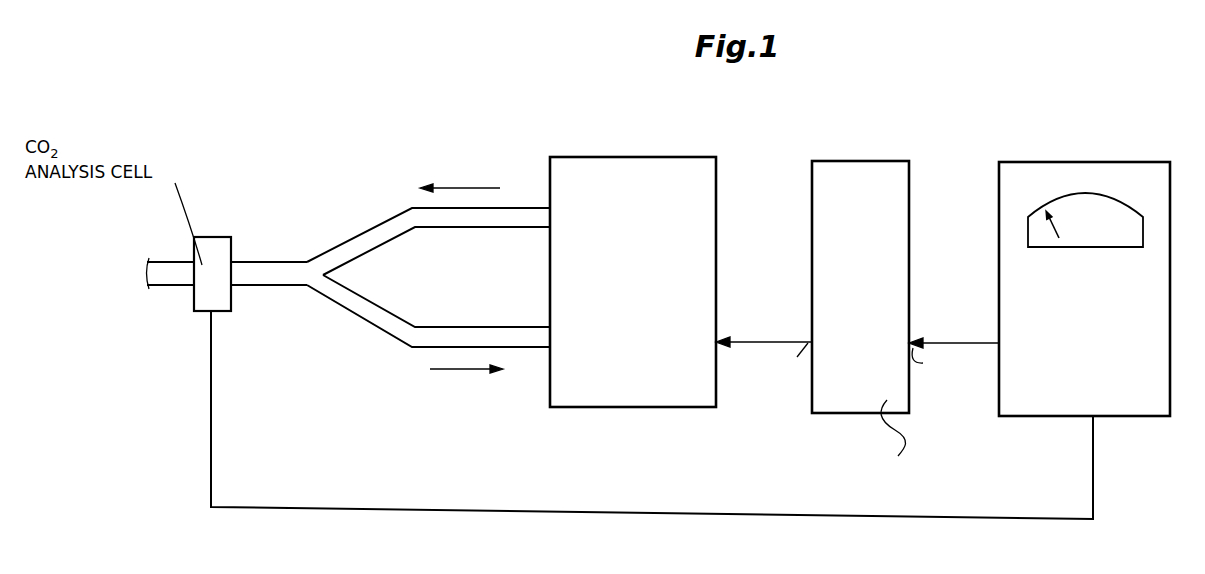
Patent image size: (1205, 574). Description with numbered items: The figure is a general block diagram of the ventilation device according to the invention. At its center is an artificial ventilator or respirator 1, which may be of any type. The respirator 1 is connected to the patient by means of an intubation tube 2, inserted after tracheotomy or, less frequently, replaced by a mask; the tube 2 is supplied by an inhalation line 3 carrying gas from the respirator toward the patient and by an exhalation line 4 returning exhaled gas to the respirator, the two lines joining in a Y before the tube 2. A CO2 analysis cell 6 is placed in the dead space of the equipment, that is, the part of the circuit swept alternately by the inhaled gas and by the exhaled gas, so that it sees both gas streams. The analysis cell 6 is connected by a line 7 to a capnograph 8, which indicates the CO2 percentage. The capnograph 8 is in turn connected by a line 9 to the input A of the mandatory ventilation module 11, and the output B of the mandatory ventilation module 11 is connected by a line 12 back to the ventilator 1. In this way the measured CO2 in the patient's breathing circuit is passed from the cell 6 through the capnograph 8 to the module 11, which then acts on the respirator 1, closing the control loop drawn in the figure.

The respirator 1 is at (628, 172).
The intubation tube 2 is at (163, 272).
The inhalation line 3 is at (385, 232).
The exhalation line 4 is at (387, 320).
The CO2 analysis cell 6 is at (210, 250).
The line 7 is at (397, 508).
The capnograph 8 is at (1143, 182).
The line 9 is at (958, 345).
The mandatory ventilation module 11 is at (873, 180).
The line 12 is at (755, 338).